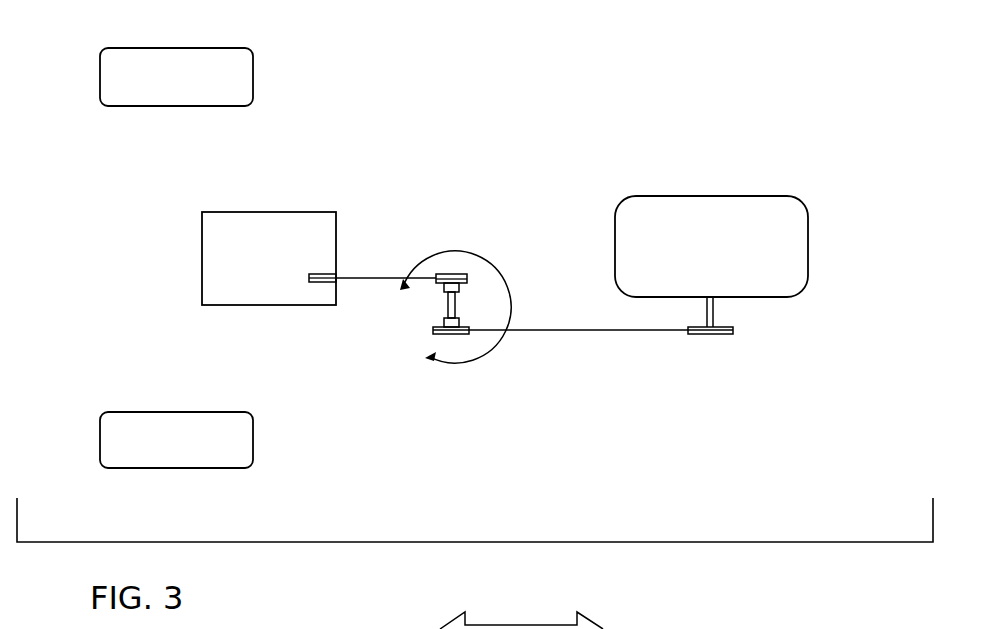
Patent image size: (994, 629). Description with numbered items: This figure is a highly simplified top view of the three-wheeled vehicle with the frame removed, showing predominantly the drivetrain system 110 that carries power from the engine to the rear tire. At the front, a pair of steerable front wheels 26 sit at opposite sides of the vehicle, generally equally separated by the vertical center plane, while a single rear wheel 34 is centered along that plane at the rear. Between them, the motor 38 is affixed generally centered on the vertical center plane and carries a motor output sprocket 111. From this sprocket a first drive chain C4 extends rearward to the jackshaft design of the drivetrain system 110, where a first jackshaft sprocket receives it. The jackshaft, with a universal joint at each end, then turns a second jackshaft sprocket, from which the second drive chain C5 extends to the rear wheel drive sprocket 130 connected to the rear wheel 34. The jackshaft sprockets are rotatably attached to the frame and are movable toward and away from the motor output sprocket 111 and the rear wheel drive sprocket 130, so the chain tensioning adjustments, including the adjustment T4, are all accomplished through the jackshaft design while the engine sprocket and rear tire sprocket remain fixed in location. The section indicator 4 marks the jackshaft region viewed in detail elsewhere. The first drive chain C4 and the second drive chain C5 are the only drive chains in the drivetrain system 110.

The steerable front wheels 26 is at (166, 253).
The motor 38 is at (234, 258).
The motor output sprocket 111 is at (285, 227).
The first drive chain C4 is at (386, 239).
The drivetrain system 110 is at (488, 281).
The section line 4 is at (450, 308).
The second drive chain C5 is at (578, 355).
The rear wheel 34 is at (740, 246).
The rear wheel drive sprocket 130 is at (738, 338).
The chain tensioning adjustment T4 is at (521, 608).